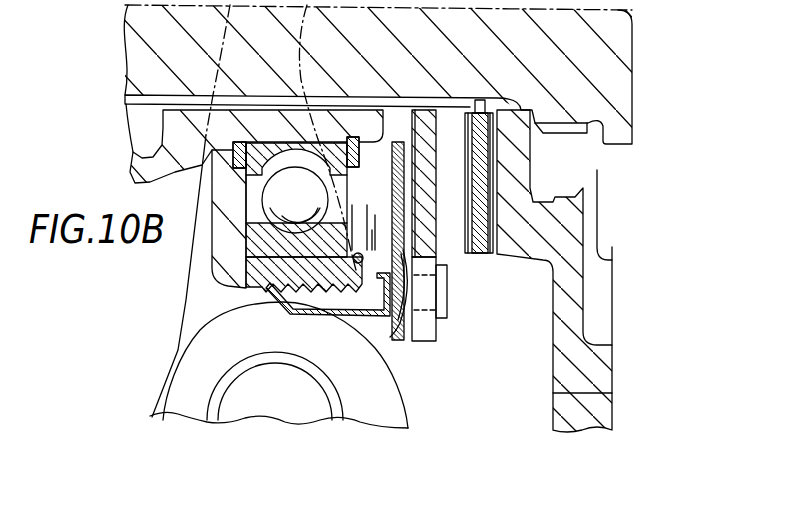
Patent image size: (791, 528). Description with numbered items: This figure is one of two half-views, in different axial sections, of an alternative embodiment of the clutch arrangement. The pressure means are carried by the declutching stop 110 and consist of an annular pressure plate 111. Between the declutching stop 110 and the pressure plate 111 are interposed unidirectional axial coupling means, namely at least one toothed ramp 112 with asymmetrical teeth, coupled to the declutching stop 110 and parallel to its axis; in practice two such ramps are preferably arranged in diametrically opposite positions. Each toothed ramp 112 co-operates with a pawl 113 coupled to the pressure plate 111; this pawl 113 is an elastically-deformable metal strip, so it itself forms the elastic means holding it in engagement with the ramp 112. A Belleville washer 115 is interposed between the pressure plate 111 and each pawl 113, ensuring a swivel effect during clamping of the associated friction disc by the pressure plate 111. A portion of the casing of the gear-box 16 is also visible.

The declutching stop 110 is at (214, 277).
The annular pressure plate 111 is at (434, 345).
The toothed ramp 112 is at (316, 298).
The pawl 113 is at (358, 319).
The Belleville washer 115 is at (398, 341).
The gear-box 16 is at (548, 429).